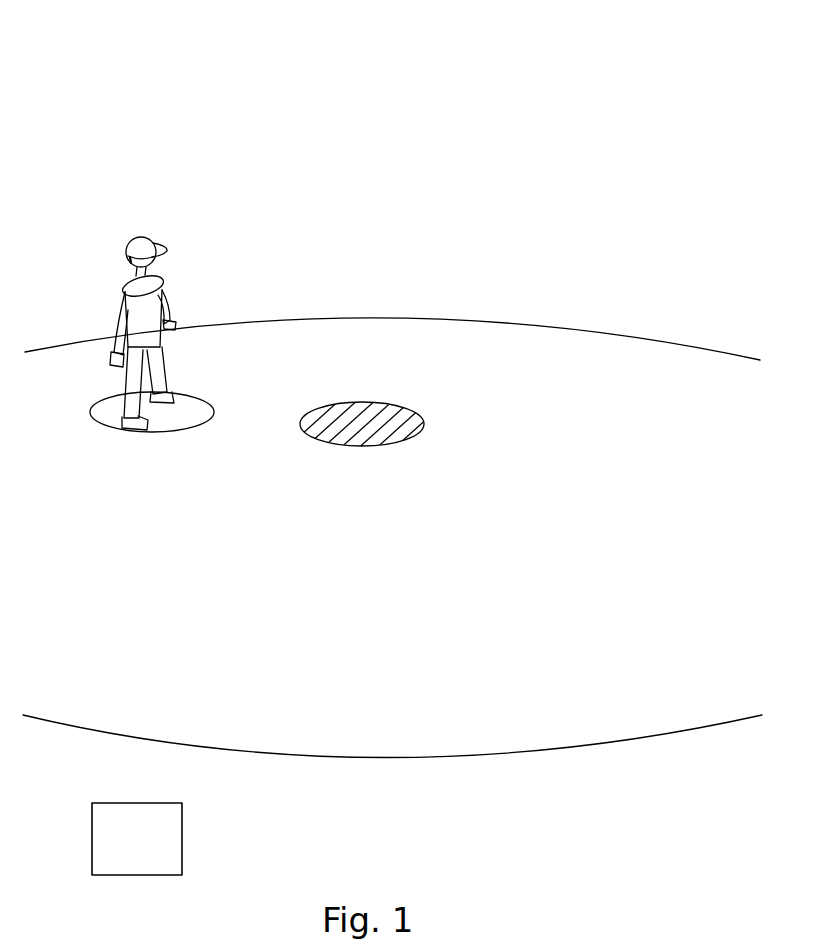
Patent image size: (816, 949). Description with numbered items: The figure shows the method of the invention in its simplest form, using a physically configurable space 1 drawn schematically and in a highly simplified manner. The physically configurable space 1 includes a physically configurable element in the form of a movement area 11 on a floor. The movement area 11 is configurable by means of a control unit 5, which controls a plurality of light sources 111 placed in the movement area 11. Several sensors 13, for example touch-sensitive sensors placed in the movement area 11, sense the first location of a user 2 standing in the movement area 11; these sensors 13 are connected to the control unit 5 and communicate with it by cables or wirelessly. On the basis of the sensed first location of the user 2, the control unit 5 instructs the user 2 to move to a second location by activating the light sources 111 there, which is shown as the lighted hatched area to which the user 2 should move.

The physically configurable space 1 is at (450, 113).
The user 2 is at (147, 232).
The control unit 5 is at (133, 833).
The movement area 11 is at (573, 415).
The sensors 13 is at (178, 412).
The light sources 111 is at (363, 422).